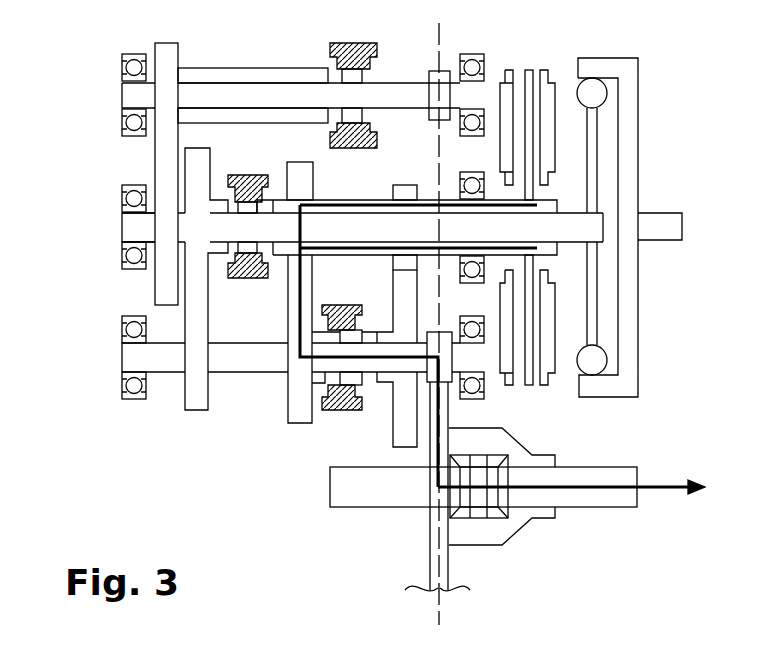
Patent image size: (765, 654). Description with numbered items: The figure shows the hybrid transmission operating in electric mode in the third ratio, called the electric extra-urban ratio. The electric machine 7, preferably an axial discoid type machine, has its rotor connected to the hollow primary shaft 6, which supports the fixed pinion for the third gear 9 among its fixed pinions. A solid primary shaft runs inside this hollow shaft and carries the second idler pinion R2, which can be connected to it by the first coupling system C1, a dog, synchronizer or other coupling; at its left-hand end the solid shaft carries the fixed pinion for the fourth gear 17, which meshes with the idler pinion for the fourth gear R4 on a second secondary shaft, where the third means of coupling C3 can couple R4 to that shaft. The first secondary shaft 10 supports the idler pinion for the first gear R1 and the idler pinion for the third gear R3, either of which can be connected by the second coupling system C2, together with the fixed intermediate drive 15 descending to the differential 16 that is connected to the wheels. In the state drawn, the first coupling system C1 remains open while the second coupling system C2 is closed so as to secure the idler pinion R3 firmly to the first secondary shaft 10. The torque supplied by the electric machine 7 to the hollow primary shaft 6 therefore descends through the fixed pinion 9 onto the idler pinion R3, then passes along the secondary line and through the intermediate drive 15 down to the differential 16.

The hollow primary shaft 6 is at (557, 212).
The electric machine 7 is at (543, 70).
The fixed pinion for the third gear 9 is at (303, 173).
The first secondary shaft 10 is at (265, 360).
The fixed intermediate drive 15 is at (449, 412).
The differential 16 is at (487, 533).
The fixed pinion for the fourth gear 17 is at (160, 287).
The idler pinion for the first gear R1 is at (390, 304).
The second idler pinion R2 is at (206, 294).
The idler pinion for the third gear R3 is at (314, 355).
The idler pinion for the fourth gear R4 is at (241, 158).
The first coupling system C1 is at (248, 213).
The second coupling system C2 is at (342, 345).
The third means of coupling C3 is at (353, 79).